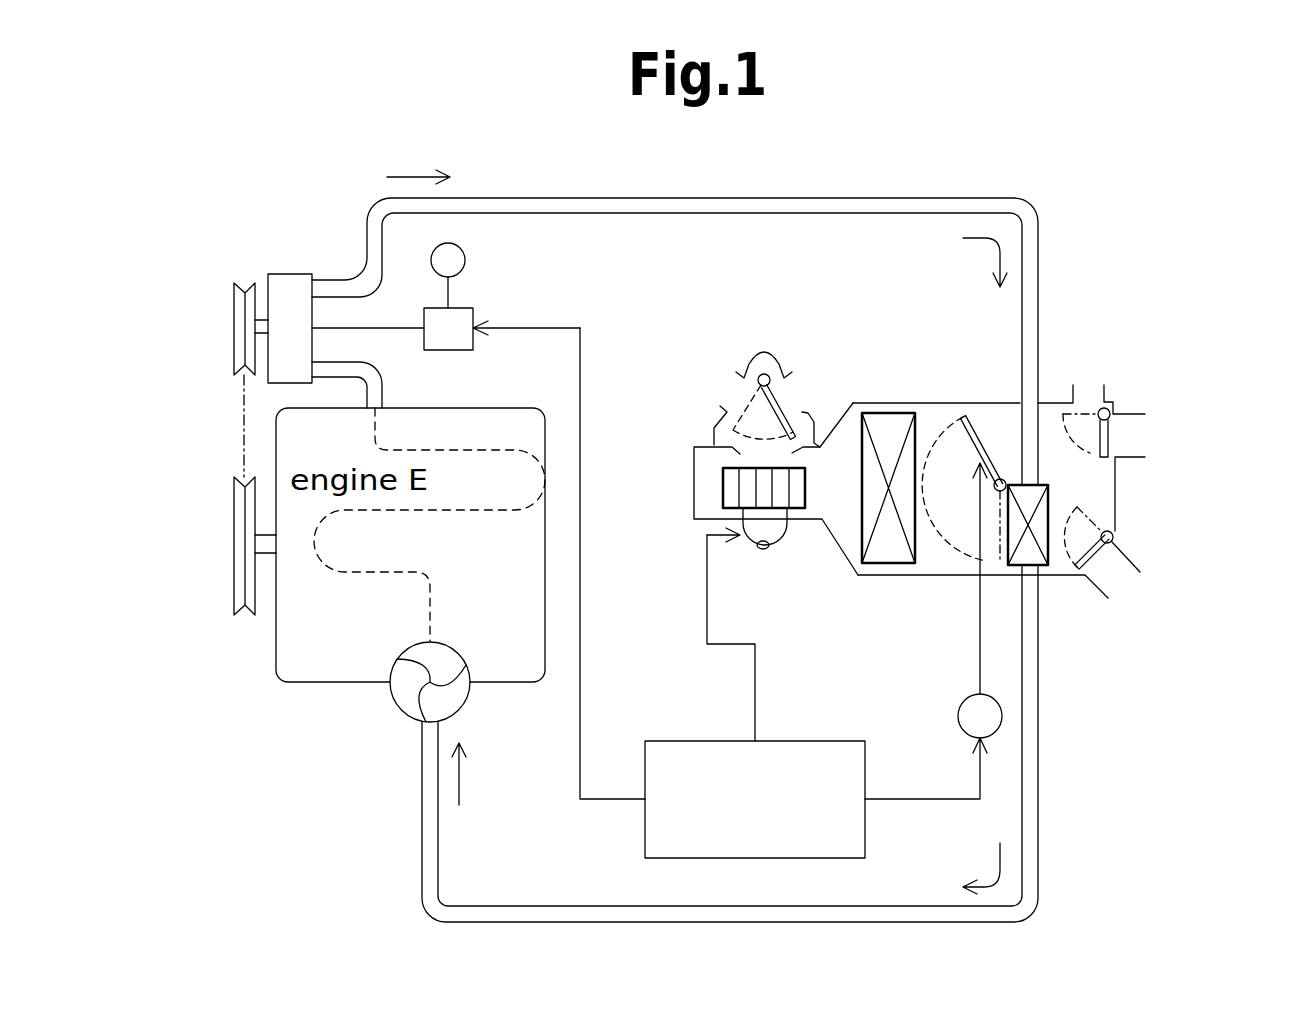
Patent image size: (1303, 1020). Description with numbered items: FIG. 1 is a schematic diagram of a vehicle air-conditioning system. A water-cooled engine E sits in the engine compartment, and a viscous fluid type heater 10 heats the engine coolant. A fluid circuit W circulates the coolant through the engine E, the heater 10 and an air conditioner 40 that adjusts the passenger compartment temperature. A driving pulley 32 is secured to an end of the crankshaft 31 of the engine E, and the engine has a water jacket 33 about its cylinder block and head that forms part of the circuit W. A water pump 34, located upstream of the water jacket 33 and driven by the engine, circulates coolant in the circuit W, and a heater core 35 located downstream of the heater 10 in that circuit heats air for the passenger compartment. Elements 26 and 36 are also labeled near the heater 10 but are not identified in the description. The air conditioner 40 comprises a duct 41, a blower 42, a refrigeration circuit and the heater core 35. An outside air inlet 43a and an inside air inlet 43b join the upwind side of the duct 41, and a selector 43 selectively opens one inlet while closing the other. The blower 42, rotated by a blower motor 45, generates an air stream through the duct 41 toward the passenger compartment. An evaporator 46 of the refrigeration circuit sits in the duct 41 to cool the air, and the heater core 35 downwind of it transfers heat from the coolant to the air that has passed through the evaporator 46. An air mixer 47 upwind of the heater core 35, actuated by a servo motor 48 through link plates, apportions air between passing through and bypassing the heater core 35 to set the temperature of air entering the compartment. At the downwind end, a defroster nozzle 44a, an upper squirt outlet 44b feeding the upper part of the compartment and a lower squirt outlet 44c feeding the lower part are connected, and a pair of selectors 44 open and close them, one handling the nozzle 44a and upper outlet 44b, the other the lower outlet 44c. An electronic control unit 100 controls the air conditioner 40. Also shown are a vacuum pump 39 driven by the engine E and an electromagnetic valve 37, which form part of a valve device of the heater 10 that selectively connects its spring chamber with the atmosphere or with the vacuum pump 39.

The viscous fluid type heater 10 is at (289, 274).
The heater pulley 26 is at (234, 330).
The belt 36 is at (243, 430).
The driving pulley 32 is at (234, 548).
The crankshaft 31 is at (267, 555).
The water jacket 33 is at (440, 593).
The water pump 34 is at (397, 708).
The vacuum pump 39 is at (467, 262).
The electromagnetic valve 37 is at (478, 553).
The air conditioner 40 is at (756, 342).
The duct 41 is at (926, 403).
The outside air inlet 43a is at (735, 392).
The inside air inlet 43b is at (800, 380).
The selector 43 is at (792, 405).
The blower 42 is at (728, 488).
The blower motor 45 is at (777, 540).
The evaporator 46 is at (886, 565).
The heater core 35 is at (1040, 566).
The air mixer 47 is at (980, 430).
The defroster nozzle 44a is at (1090, 392).
The selectors 44 is at (1112, 427).
The upper squirt outlet 44b is at (1137, 437).
The lower squirt outlet 44c is at (1120, 585).
The servo motor 48 is at (958, 716).
The electronic control unit 100 is at (680, 741).
The fluid circuit W is at (575, 183).